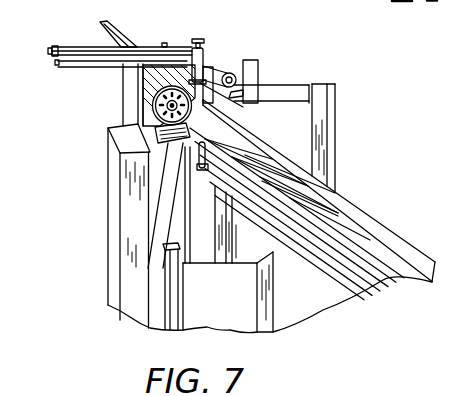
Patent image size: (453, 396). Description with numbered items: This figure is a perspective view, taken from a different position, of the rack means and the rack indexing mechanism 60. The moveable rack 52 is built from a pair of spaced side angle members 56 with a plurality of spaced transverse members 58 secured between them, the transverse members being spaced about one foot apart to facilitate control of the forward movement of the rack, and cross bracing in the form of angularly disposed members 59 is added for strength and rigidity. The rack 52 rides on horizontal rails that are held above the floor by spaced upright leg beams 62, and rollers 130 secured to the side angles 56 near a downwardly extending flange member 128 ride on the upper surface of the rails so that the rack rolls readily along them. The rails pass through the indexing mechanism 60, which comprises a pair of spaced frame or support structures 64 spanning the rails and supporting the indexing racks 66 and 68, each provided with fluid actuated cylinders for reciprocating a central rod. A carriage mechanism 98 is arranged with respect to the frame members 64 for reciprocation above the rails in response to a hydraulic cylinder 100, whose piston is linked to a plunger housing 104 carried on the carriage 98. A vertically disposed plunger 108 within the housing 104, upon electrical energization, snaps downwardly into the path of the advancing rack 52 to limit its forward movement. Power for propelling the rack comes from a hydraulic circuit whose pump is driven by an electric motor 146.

The moveable rack 52 is at (312, 200).
The side angle members 56 is at (396, 238).
The transverse members 58 is at (338, 214).
The angularly disposed members 59 is at (300, 193).
The rack indexing mechanism 60 is at (95, 52).
The upright leg beams 62 is at (262, 302).
The frame or support structures 64 is at (323, 123).
The indexing rack 66 is at (77, 64).
The indexing rack 68 is at (66, 45).
The carriage mechanism 98 is at (148, 78).
The hydraulic cylinder 100 is at (212, 72).
The plunger housing 104 is at (195, 50).
The plunger 108 is at (200, 42).
The flange member 128 is at (197, 170).
The roller members 130 is at (262, 135).
The electric motor 146 is at (151, 100).